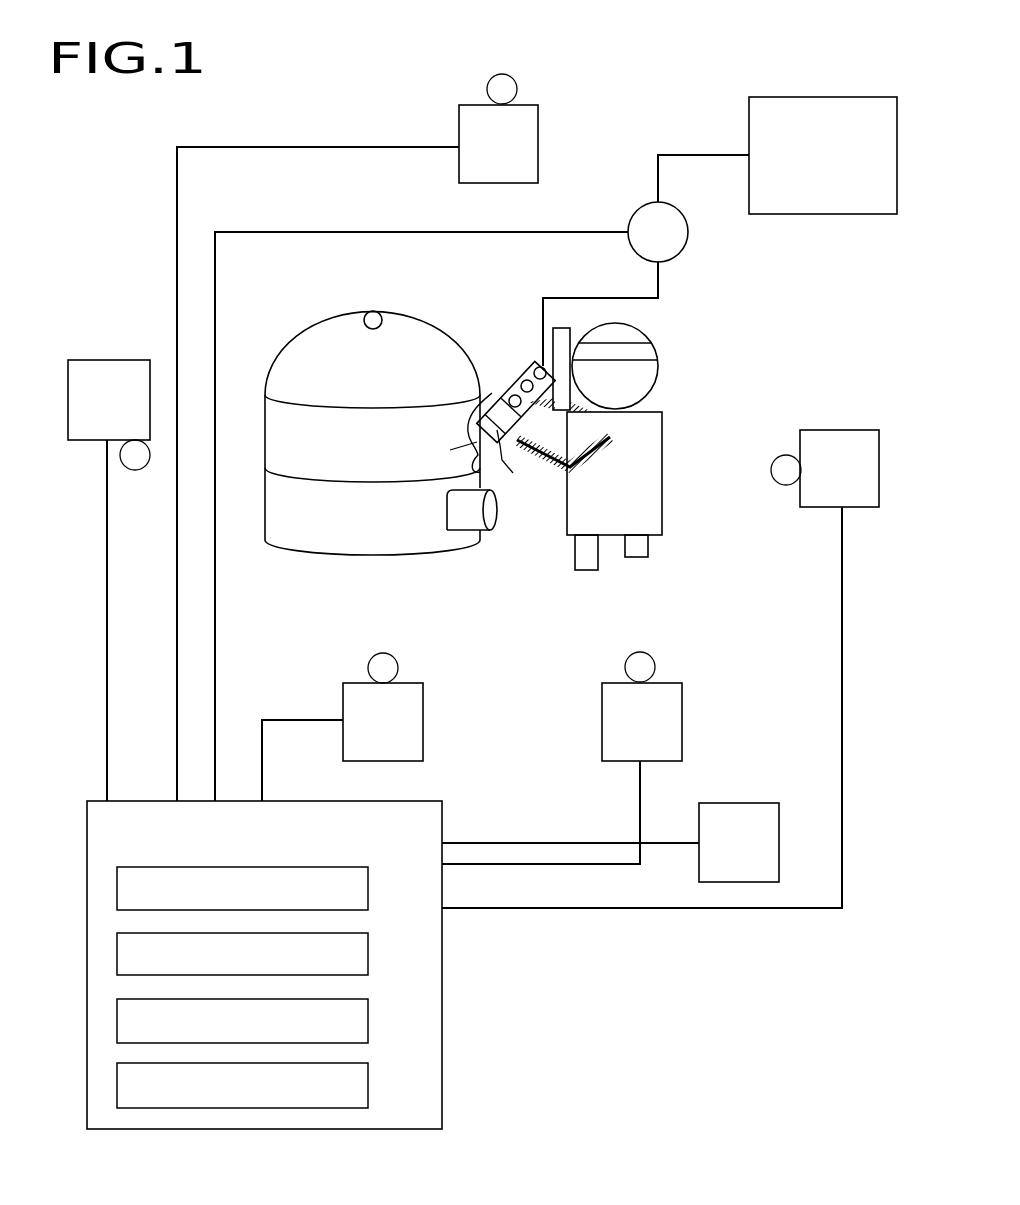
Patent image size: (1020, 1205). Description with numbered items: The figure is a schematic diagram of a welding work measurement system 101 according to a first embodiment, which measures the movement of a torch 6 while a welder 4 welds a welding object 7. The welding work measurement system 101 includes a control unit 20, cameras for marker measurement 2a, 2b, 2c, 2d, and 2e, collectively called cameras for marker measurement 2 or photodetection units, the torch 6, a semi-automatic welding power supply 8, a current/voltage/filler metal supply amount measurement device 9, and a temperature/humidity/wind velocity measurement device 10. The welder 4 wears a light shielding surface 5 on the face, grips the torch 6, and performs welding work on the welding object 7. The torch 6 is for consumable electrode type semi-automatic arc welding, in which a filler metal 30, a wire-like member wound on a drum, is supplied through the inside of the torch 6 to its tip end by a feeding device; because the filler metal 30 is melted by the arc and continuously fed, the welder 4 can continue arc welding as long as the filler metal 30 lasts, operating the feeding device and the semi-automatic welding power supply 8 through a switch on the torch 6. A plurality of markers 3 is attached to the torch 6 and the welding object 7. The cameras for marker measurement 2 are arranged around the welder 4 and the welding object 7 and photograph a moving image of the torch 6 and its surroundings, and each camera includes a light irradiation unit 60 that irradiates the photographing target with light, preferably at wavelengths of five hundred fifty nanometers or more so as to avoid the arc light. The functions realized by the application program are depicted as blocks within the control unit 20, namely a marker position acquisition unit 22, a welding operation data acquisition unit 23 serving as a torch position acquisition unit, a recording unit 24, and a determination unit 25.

The cameras for marker measurement 2 is at (481, 433).
The camera for marker measurement 2a is at (423, 718).
The camera for marker measurement 2b is at (682, 720).
The camera for marker measurement 2c is at (838, 430).
The camera for marker measurement 2d is at (105, 360).
The camera for marker measurement 2e is at (538, 147).
The markers 3 is at (364, 316).
The welder 4 is at (663, 438).
The light shielding surface 5 is at (657, 352).
The torch 6 is at (514, 462).
The welding object 7 is at (420, 348).
The semi-automatic welding power supply 8 is at (830, 97).
The current/voltage/filler metal supply amount measurement device 9 is at (688, 232).
The temperature/humidity/wind velocity measurement device 10 is at (745, 803).
The control unit 20 is at (290, 801).
The marker position acquisition unit 22 is at (368, 890).
The welding operation data acquisition unit 23 is at (368, 956).
The recording unit 24 is at (368, 1022).
The determination unit 25 is at (368, 1087).
The filler metal 30 is at (512, 388).
The light irradiation unit 60 is at (517, 89).
The welding work measurement system 101 is at (573, 942).